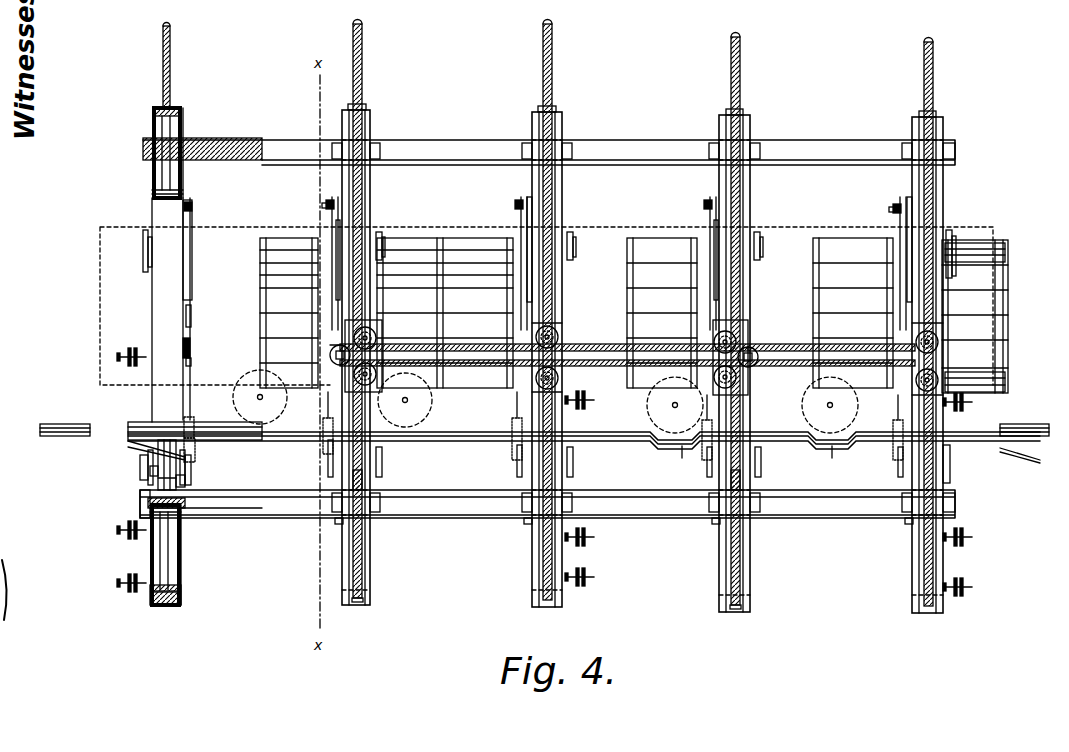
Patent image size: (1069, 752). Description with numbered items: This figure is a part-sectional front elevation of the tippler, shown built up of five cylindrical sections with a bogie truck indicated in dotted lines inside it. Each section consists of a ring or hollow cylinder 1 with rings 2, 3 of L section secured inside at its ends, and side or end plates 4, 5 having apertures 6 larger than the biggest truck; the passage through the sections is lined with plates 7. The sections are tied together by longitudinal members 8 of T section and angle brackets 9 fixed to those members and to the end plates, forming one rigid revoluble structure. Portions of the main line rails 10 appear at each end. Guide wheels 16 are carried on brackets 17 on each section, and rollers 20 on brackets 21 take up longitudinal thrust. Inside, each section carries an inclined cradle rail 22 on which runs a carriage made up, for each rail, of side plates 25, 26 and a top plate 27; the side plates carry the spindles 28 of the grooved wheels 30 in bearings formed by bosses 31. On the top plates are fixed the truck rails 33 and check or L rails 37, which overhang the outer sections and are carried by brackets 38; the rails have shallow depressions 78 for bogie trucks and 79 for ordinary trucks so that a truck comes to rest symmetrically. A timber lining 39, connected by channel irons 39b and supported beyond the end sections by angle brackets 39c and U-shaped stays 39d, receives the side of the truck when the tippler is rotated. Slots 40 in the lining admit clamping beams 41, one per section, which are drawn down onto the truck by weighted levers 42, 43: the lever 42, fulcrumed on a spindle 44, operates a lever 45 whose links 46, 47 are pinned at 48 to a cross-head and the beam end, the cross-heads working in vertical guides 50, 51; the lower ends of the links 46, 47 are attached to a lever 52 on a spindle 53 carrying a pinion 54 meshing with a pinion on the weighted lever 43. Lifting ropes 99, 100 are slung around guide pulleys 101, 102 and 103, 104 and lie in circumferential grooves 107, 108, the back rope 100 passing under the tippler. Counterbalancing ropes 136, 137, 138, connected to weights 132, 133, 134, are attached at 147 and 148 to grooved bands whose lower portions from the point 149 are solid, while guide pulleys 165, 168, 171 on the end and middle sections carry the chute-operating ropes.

The ring or hollow cylinder 1 is at (178, 110).
The ring of L section 2 is at (152, 120).
The ring of L section 3 is at (183, 118).
The side or end plate 4 is at (152, 175).
The side or end plate 5 is at (183, 175).
The aperture 6 is at (170, 205).
The lining plate 7 is at (160, 198).
The longitudinal member or tie 8 is at (143, 148).
The angle bracket 9 is at (378, 152).
The main line rails 10 is at (55, 424).
The guide wheel 16 is at (143, 242).
The bracket 17 is at (148, 258).
The roller 20 is at (330, 355).
The bracket 21 is at (333, 345).
The rail 22 is at (205, 498).
The side plate 25 is at (138, 430).
The side plate 26 is at (196, 448).
The top plate 27 is at (166, 438).
The spindle 28 is at (188, 480).
The flanged roller 30 is at (160, 477).
The boss 31 is at (150, 470).
The rail 33 is at (465, 432).
The check or L rail 37 is at (212, 425).
The bracket 38 is at (128, 445).
The timber lining 39 is at (266, 318).
The vertical channel iron 39b is at (440, 283).
The angle bracket 39c is at (1008, 258).
The vertical stay 39d is at (1008, 330).
The vertical slot 40 is at (330, 230).
The clamping beam 41 is at (190, 204).
The weighted lever 42 is at (323, 405).
The weighted lever 43 is at (184, 396).
The spindle 44 is at (500, 355).
The lever 45 is at (372, 318).
The link 46 is at (192, 245).
The link 47 is at (192, 262).
The pin 48 is at (324, 210).
The vertical guide 50 is at (528, 205).
The vertical guide 51 is at (192, 228).
The lever 52 is at (192, 325).
The spindle 53 is at (192, 345).
The pinion 54 is at (192, 360).
The concavity or depression 78 is at (831, 458).
The concavity or depression 79 is at (681, 458).
The front lifting rope 99 is at (363, 73).
The back lifting rope 100 is at (358, 605).
The guide pulley 101 is at (377, 335).
The guide pulley 102 is at (738, 338).
The guide pulley 103 is at (377, 378).
The guide pulley 104 is at (738, 380).
The guiding groove 107 is at (370, 112).
The guiding groove 108 is at (750, 114).
The counterbalancing weight 132 is at (930, 614).
The counterbalancing weight 133 is at (550, 607).
The counterbalancing weight 134 is at (168, 602).
The counterbalancing rope 136 is at (933, 77).
The counterbalancing rope 137 is at (552, 72).
The counterbalancing rope 138 is at (170, 58).
The rope attachment point 147 is at (557, 335).
The rope attachment point 148 is at (557, 375).
The point 149 is at (345, 522).
The guide pulleys 165 is at (972, 494).
The guide pulleys 168 is at (117, 470).
The guide pulleys 171 is at (593, 488).